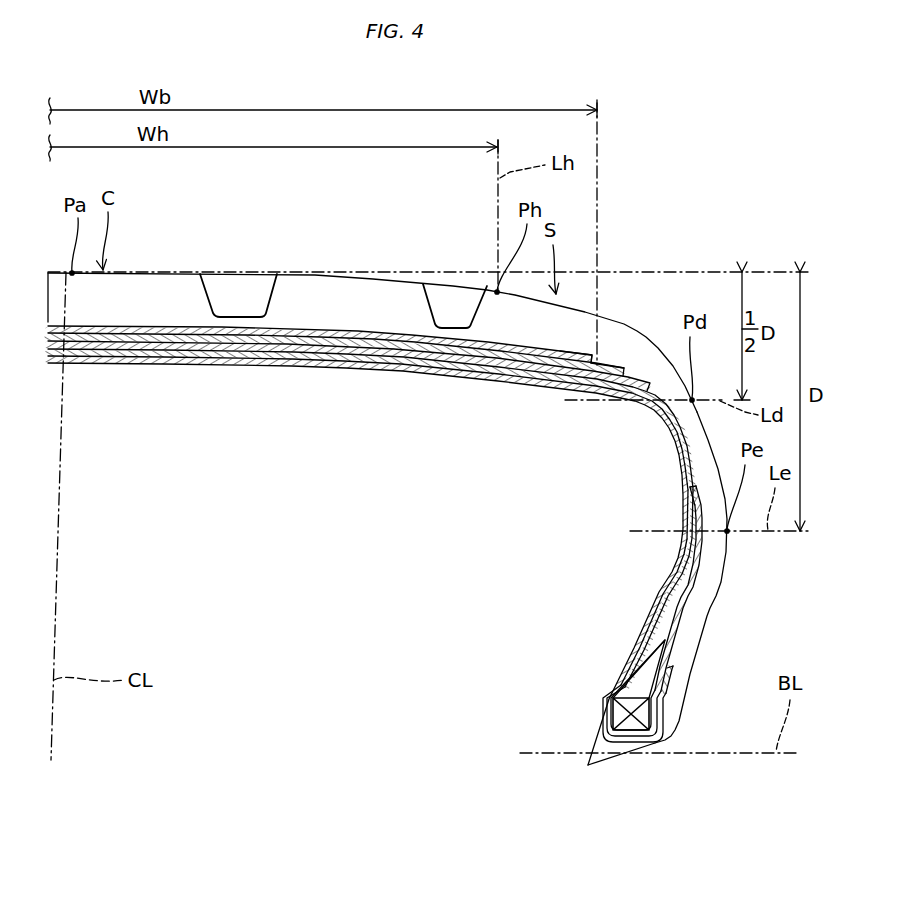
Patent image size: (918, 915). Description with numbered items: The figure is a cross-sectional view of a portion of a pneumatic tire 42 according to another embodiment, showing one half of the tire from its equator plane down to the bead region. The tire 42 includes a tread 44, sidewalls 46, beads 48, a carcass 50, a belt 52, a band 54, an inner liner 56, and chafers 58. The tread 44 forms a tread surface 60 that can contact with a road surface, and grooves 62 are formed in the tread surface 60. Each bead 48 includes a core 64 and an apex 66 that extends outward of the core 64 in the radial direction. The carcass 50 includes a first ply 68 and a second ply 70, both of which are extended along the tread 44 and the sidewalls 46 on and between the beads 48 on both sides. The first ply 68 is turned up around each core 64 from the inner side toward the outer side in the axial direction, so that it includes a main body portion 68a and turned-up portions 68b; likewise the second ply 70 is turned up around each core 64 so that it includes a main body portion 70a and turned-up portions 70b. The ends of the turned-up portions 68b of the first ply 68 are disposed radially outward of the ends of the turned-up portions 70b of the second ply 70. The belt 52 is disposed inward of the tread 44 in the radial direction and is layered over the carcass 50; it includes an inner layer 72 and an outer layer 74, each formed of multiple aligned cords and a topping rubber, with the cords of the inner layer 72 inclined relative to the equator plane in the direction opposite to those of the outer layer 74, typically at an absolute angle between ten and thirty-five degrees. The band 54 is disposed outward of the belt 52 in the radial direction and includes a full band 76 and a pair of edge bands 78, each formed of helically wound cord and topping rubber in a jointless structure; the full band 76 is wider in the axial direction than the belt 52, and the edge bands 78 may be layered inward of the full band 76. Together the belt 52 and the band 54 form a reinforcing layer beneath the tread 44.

The pneumatic tire 42 is at (760, 186).
The tread 44 is at (398, 277).
The sidewall 46 is at (719, 595).
The bead 48 is at (535, 640).
The carcass 50 is at (250, 416).
The belt 52 is at (222, 416).
The band 54 is at (700, 228).
The inner liner 56 is at (481, 378).
The chafer 58 is at (631, 757).
The tread surface 60 is at (340, 274).
The groove 62 is at (262, 298).
The core 64 is at (624, 715).
The apex 66 is at (640, 672).
The first ply 68 is at (265, 362).
The main body portion 68a is at (648, 613).
The turned-up portion 68b is at (706, 548).
The second ply 70 is at (316, 362).
The main body portion 70a is at (663, 598).
The turned-up portion 70b is at (671, 677).
The inner layer 72 is at (155, 360).
The outer layer 74 is at (204, 360).
The full band 76 is at (620, 367).
The edge band 78 is at (578, 347).